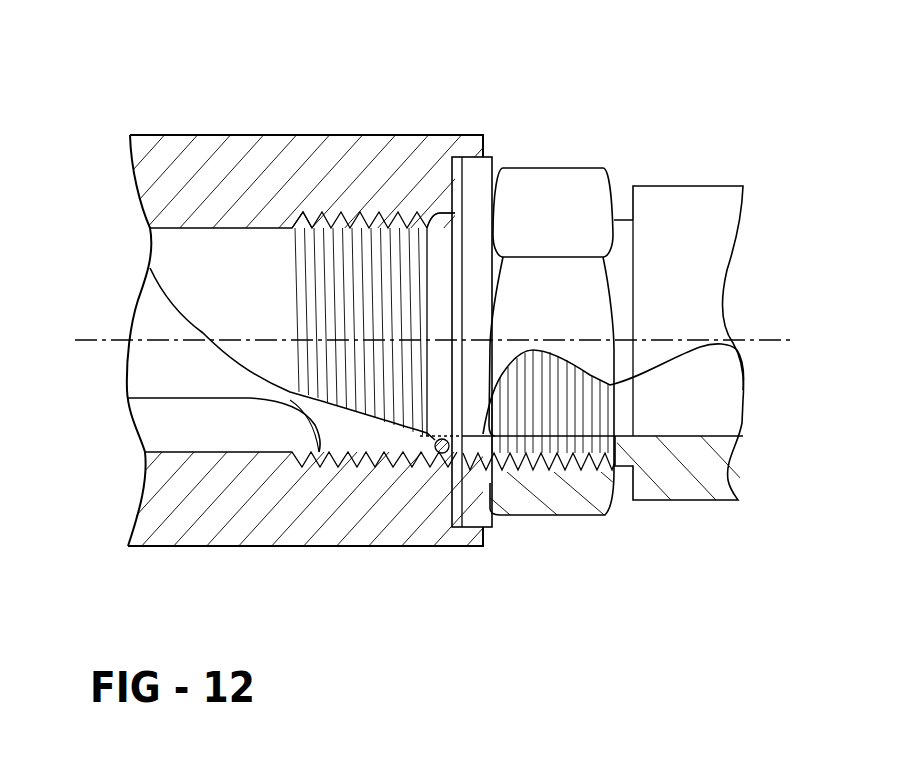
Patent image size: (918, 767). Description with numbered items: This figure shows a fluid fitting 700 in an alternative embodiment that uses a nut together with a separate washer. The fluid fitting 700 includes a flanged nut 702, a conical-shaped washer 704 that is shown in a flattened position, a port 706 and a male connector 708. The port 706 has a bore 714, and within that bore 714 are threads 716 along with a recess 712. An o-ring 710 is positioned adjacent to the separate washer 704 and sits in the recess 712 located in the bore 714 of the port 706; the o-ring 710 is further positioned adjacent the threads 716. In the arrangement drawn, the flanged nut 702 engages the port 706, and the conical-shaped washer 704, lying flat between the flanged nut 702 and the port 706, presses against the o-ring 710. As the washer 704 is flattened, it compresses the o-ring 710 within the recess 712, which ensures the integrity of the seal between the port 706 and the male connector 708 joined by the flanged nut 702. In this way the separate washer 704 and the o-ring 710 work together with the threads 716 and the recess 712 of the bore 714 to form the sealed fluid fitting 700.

The fluid fitting 700 is at (756, 150).
The flanged nut 702 is at (593, 500).
The conical-shaped washer 704 is at (460, 155).
The port 706 is at (212, 525).
The male connector 708 is at (735, 490).
The o-ring 710 is at (427, 217).
The recess 712 is at (448, 215).
The bore 714 is at (478, 192).
The threads 716 is at (135, 398).